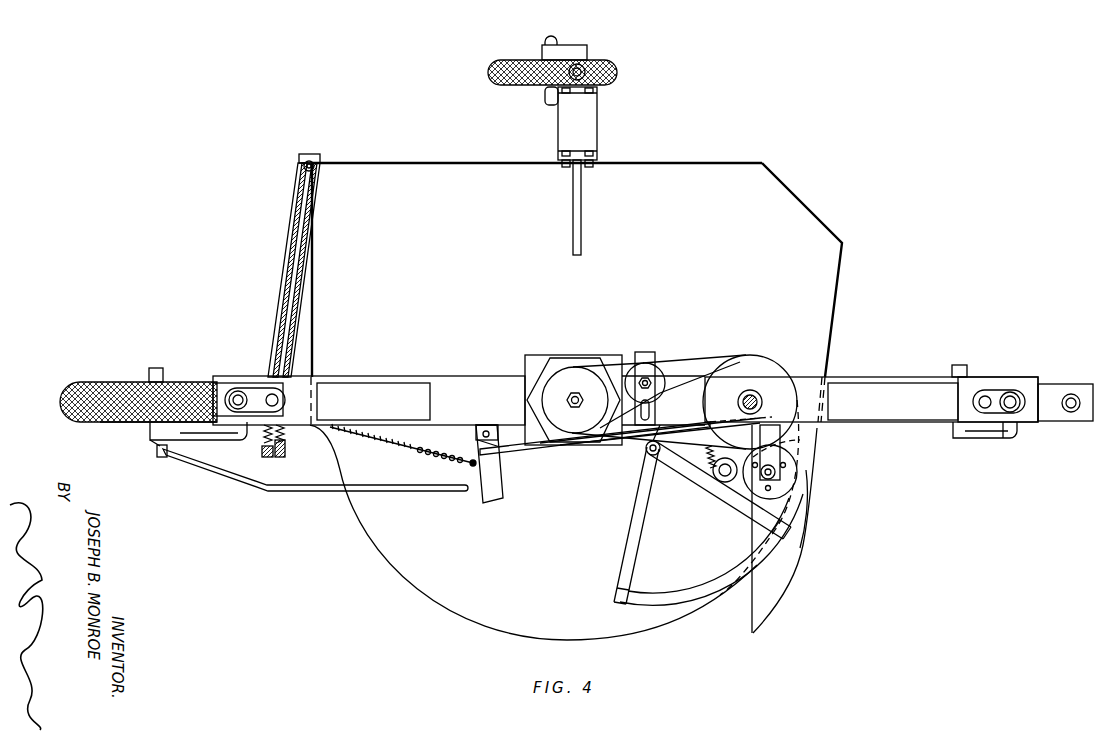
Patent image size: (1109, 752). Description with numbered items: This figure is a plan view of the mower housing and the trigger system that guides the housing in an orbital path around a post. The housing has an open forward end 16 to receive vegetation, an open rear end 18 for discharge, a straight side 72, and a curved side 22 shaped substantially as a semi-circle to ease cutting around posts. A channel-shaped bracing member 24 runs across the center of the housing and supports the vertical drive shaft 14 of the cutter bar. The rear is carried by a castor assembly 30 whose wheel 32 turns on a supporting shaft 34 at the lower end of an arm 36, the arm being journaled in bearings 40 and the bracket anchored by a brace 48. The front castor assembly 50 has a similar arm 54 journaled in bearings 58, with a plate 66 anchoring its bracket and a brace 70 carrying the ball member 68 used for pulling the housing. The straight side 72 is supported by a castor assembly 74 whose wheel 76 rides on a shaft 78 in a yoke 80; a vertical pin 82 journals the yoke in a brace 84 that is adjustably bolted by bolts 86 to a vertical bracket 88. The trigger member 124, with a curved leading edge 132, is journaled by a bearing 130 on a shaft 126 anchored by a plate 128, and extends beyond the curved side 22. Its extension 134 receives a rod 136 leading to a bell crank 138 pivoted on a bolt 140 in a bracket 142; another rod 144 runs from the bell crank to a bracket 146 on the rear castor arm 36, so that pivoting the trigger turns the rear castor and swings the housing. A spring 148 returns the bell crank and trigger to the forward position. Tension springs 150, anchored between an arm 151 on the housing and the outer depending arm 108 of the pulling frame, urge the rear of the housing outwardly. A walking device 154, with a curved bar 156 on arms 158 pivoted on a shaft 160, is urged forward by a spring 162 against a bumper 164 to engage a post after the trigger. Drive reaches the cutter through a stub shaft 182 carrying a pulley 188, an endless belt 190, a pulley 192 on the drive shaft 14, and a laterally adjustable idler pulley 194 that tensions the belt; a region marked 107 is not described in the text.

The drive shaft 14 is at (573, 396).
The forward end 16 is at (836, 295).
The rear end 18 is at (314, 322).
The curved side 22 is at (476, 622).
The bracing member 24 is at (468, 382).
The castor assembly 30 is at (62, 386).
The wheel 32 is at (86, 414).
The supporting shaft 34 is at (153, 368).
The arm 36 is at (200, 434).
The bearings 40 is at (245, 396).
The brace 48 is at (379, 382).
The front castor assembly 50 is at (1004, 446).
The arm 54 is at (995, 433).
The bearings 58 is at (1005, 396).
The plate 66 is at (914, 390).
The ball member 68 is at (1073, 394).
The brace 70 is at (1082, 418).
The straight side 72 is at (424, 163).
The castor assembly 74 is at (488, 62).
The wheel 76 is at (518, 84).
The shaft 78 is at (550, 40).
The yoke 80 is at (563, 47).
The vertical pin 82 is at (585, 66).
The brace 84 is at (590, 126).
The bolts 86 is at (565, 167).
The bracket 88 is at (581, 212).
The guard plate 107 is at (472, 552).
The arms 108 is at (267, 457).
The trigger member 124 is at (780, 566).
The shaft 126 is at (790, 492).
The plate 128 is at (783, 432).
The bearing 130 is at (786, 474).
The leading edge 132 is at (803, 546).
The extension 134 is at (786, 450).
The rod 136 is at (520, 452).
The bell crank 138 is at (481, 485).
The bolt 140 is at (480, 435).
The bracket 142 is at (484, 426).
The rod 144 is at (318, 490).
The bracket 146 is at (157, 447).
The spring 148 is at (398, 447).
The tension springs 150 is at (290, 282).
The arm 151 is at (312, 156).
The walking device 154 is at (622, 554).
The curved bar 156 is at (642, 606).
The arms 158 is at (745, 520).
The shaft 160 is at (648, 453).
The spring 162 is at (703, 470).
The bumper 164 is at (722, 482).
The stub shaft 182 is at (757, 396).
The pulley 188 is at (757, 368).
The endless belt 190 is at (700, 380).
The pulley 192 is at (578, 372).
The idler pulley 194 is at (652, 370).